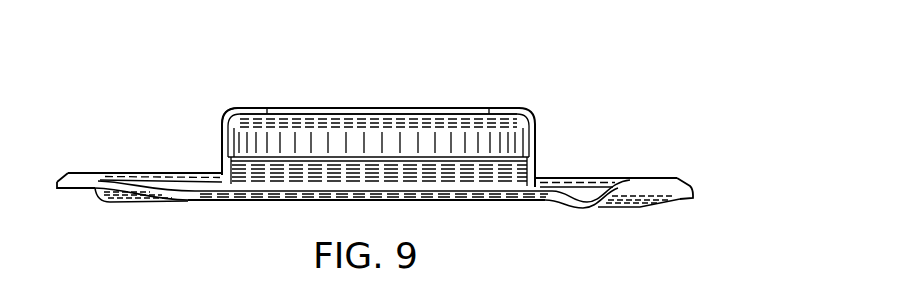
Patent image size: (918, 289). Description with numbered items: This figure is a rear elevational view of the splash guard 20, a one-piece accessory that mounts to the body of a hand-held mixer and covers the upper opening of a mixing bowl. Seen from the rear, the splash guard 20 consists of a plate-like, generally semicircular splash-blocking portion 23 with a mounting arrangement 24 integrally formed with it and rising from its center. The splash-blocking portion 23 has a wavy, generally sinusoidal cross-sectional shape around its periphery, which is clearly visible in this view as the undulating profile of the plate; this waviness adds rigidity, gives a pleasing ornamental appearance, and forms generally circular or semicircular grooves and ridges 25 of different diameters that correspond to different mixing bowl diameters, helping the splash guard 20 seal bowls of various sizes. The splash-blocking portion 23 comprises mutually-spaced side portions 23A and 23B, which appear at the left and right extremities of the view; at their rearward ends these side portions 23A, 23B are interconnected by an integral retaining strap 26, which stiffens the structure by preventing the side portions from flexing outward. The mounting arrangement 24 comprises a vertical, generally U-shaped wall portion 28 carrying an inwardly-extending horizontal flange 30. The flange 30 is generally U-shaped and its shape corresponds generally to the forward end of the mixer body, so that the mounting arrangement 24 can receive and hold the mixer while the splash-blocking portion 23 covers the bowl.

The splash guard 20 is at (655, 130).
The splash-blocking portion 23 is at (174, 171).
The side portion 23A is at (100, 173).
The side portion 23B is at (697, 187).
The mounting arrangement 24 is at (550, 136).
The grooves and ridges 25 is at (103, 203).
The retaining strap 26 is at (481, 207).
The wall portion 28 is at (226, 110).
The flange 30 is at (321, 108).